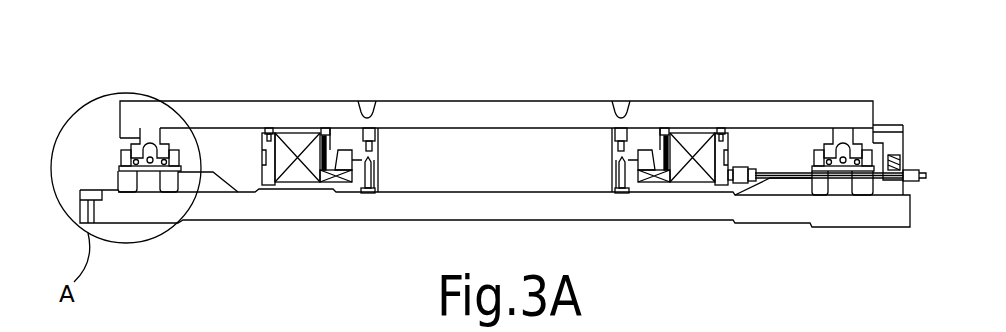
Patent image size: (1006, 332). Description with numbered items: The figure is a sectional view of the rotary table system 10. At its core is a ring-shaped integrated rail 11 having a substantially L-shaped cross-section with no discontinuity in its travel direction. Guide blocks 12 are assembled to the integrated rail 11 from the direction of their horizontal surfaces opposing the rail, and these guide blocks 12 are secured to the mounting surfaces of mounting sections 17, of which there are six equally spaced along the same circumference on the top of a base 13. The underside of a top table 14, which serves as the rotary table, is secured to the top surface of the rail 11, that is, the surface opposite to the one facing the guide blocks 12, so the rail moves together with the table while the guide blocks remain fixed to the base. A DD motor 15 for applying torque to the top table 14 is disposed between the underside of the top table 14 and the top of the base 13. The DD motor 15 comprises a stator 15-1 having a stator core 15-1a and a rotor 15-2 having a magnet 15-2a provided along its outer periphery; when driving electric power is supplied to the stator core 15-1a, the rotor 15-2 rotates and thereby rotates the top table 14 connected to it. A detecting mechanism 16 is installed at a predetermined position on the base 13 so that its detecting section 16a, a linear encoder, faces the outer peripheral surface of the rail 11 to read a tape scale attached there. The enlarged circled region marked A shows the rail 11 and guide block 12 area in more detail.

The rotary table system 10 is at (592, 69).
The integrated rail 11 is at (150, 137).
The guide blocks 12 is at (130, 152).
The base 13 is at (698, 220).
The top table 14 is at (505, 101).
The DD motor 15 is at (420, 137).
The stator 15-1 is at (267, 185).
The stator core 15-1a is at (297, 183).
The rotor 15-2 is at (345, 140).
The magnet 15-2a is at (328, 136).
The detecting mechanism 16 is at (903, 146).
The detecting section 16a is at (876, 125).
The mounting sections 17 is at (125, 182).